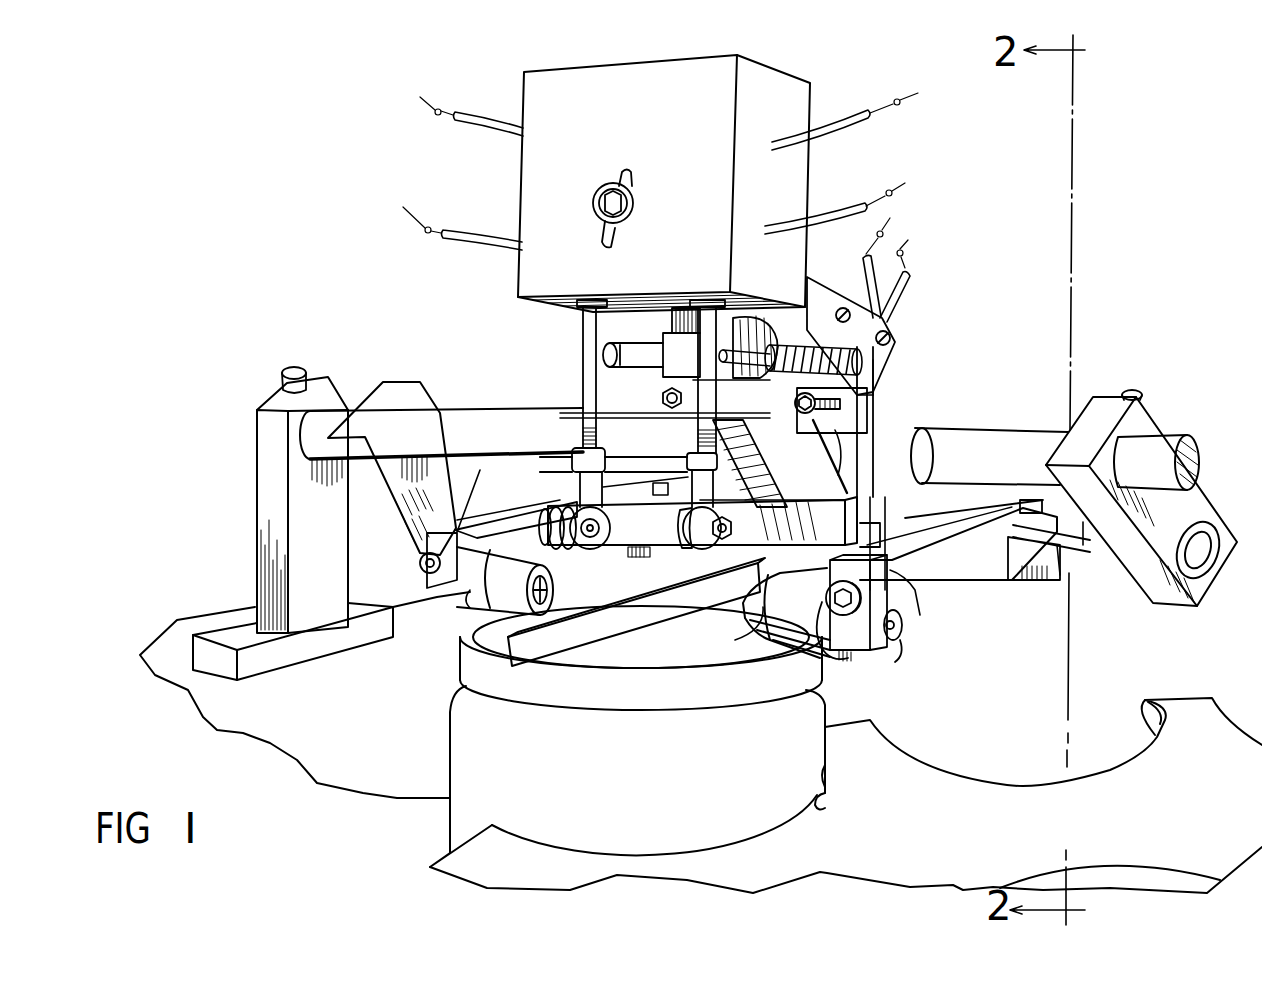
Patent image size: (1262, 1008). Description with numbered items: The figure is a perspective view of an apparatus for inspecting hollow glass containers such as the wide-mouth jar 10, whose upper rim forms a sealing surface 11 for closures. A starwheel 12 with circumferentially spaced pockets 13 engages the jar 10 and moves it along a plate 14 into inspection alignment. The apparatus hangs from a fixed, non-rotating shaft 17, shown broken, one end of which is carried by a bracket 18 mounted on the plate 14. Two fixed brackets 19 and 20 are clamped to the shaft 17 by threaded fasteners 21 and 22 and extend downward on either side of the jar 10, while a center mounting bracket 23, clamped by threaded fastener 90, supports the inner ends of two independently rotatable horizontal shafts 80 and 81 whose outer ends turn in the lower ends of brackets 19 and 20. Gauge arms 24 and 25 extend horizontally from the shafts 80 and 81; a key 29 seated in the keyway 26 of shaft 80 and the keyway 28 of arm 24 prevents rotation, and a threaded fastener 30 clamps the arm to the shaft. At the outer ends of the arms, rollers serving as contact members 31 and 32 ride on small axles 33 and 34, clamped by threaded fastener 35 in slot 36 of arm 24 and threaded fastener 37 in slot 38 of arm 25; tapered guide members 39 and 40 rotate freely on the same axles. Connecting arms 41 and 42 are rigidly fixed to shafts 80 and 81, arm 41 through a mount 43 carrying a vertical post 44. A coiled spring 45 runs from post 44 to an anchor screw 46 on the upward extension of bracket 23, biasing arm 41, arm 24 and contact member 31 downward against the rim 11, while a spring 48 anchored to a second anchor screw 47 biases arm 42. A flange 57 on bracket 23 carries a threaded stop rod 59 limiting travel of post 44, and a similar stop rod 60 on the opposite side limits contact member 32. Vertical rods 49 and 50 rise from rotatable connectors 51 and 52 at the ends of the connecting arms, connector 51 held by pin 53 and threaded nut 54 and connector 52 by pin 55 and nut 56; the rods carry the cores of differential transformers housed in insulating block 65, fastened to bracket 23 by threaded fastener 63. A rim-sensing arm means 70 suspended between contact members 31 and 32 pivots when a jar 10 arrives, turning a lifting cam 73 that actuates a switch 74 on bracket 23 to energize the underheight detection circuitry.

The jar 10 is at (656, 809).
The sealing surface 11 is at (718, 668).
The starwheel 12 is at (920, 842).
The pockets 13 is at (1008, 783).
The plate 14 is at (355, 714).
The fixed shaft 17 is at (477, 446).
The bracket 18 is at (341, 613).
The fixed bracket 19 is at (1180, 529).
The fixed bracket 20 is at (466, 510).
The threaded fastener 21 is at (1137, 390).
The threaded fastener 22 is at (428, 385).
The center mounting bracket 23 is at (826, 460).
The gauge arm 24 is at (990, 573).
The gauge arm 25 is at (546, 554).
The keyway 26 is at (1083, 560).
The keyway 28 is at (1020, 550).
The key 29 is at (1062, 560).
The threaded fastener 30 is at (1020, 505).
The contact member 31 is at (815, 614).
The contact member 32 is at (486, 577).
The axle 33 is at (897, 645).
The axle 34 is at (594, 590).
The threaded fastener 35 is at (858, 660).
The slot 36 is at (920, 595).
The threaded fastener 37 is at (432, 590).
The slot 38 is at (430, 540).
The tapered guide member 39 is at (745, 630).
The tapered guide member 40 is at (516, 586).
The connecting arm 41 is at (841, 535).
The connecting arm 42 is at (673, 532).
The mount 43 is at (887, 510).
The vertical post 44 is at (875, 412).
The coiled spring 45 is at (848, 310).
The anchor screw 46 is at (775, 345).
The anchor screw 47 is at (615, 348).
The spring 48 is at (666, 400).
The vertical rod 49 is at (655, 420).
The vertical rod 50 is at (585, 410).
The rotatable connector 51 is at (690, 475).
The rotatable connector 52 is at (600, 472).
The pin 53 is at (737, 528).
The threaded nut 54 is at (788, 526).
The pin 55 is at (592, 510).
The nut 56 is at (550, 510).
The flange 57 is at (880, 385).
The threaded stop rod 59 is at (797, 404).
The stop rod 60 is at (680, 384).
The threaded fastener 63 is at (593, 203).
The insulating block 65 is at (624, 128).
The arm means 70 is at (629, 639).
The lifting cam 73 is at (838, 450).
The switch 74 is at (895, 335).
The rotatable horizontal shaft 80 is at (918, 528).
The rotatable horizontal shaft 81 is at (515, 512).
The threaded fastener 90 is at (725, 450).